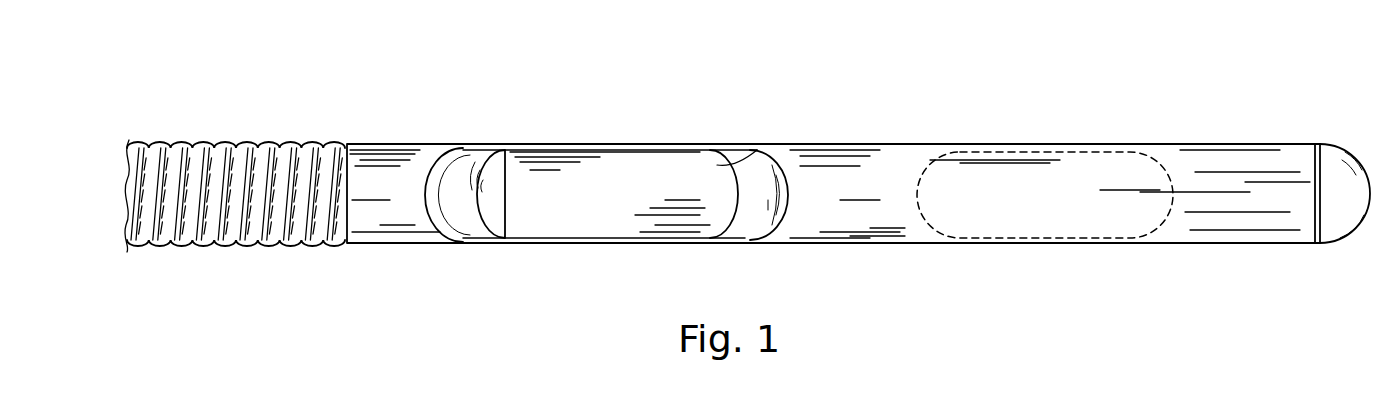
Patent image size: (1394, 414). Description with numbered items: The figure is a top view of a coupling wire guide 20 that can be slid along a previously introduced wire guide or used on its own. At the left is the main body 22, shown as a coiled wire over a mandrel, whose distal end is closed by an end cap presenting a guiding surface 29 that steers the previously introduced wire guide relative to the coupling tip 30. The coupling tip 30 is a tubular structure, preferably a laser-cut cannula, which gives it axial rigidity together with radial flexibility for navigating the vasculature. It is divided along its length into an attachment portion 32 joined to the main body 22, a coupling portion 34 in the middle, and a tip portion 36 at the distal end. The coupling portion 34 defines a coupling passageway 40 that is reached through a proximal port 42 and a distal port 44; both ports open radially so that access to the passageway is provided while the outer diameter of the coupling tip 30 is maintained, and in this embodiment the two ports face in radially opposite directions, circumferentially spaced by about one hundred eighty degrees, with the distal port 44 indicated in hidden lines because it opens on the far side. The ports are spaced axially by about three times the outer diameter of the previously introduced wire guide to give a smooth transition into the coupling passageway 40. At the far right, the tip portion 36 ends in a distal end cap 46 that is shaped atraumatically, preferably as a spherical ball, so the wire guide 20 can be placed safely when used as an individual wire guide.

The coupling wire guide 20 is at (338, 62).
The main body 22 is at (237, 142).
The guiding surface 29 is at (496, 203).
The coupling tip 30 is at (748, 131).
The attachment portion 32 is at (375, 245).
The coupling portion 34 is at (862, 245).
The tip portion 36 is at (1316, 248).
The coupling passageway 40 is at (640, 197).
The proximal port 42 is at (717, 165).
The distal port 44 is at (1003, 148).
The distal end cap 46 is at (1333, 168).